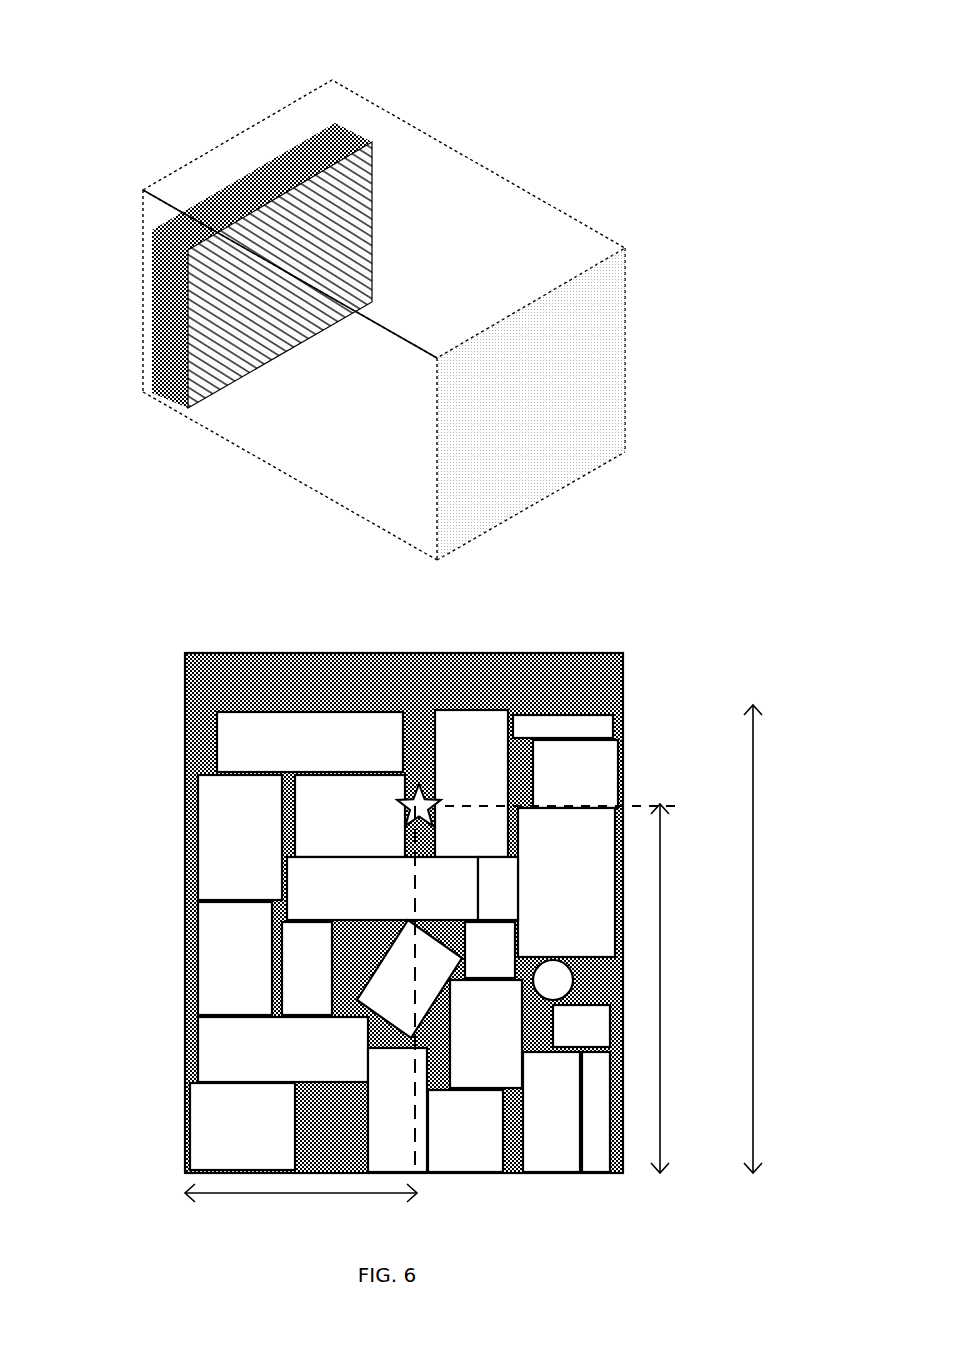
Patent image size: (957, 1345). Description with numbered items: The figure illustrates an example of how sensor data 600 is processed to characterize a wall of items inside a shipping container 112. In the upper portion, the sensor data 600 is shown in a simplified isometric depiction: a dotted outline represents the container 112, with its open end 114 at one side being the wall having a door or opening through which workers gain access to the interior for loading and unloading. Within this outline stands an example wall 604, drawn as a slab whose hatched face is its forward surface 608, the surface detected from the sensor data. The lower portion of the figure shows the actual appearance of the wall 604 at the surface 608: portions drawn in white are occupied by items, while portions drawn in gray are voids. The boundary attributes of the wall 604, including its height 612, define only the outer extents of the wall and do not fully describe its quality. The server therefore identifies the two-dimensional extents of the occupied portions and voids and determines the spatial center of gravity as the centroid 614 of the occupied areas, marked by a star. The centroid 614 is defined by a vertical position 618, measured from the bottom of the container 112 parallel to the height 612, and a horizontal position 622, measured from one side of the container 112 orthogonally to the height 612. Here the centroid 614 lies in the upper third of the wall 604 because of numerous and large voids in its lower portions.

The sensor data 600 is at (458, 106).
The container 112 is at (600, 233).
The open end 114 is at (612, 410).
The wall 604 is at (152, 362).
The forward surface 608 is at (208, 372).
The centroid 614 is at (398, 800).
The vertical position 618 is at (681, 988).
The height 612 is at (772, 939).
The horizontal position 622 is at (301, 1206).